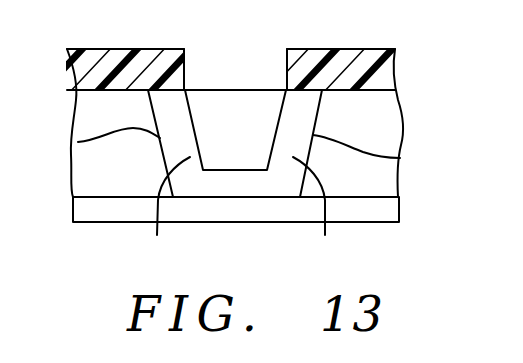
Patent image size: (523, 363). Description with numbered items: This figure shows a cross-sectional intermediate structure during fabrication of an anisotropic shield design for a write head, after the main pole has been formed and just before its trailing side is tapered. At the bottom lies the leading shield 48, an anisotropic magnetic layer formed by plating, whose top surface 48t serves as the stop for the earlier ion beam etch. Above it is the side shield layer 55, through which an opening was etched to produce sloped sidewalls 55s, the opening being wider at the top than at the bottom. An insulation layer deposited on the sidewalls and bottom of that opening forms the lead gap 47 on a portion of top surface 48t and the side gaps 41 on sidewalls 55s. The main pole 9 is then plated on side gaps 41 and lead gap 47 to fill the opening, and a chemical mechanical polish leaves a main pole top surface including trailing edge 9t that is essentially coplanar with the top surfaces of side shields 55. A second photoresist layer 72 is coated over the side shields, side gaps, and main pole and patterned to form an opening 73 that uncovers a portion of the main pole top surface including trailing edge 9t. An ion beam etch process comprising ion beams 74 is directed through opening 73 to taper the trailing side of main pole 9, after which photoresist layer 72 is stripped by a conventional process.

The main pole 9 is at (215, 157).
The trailing edge 9t is at (237, 90).
The side gaps 41 is at (239, 211).
The lead gap 47 is at (255, 180).
The leading shield 48 is at (383, 205).
The top surface of the leading shield 48t is at (231, 197).
The side shield layer 55 is at (87, 113).
The sidewalls 55s is at (80, 142).
The second photoresist layer 72 is at (85, 71).
The opening 73 is at (277, 53).
The ion beams 74 is at (205, 68).